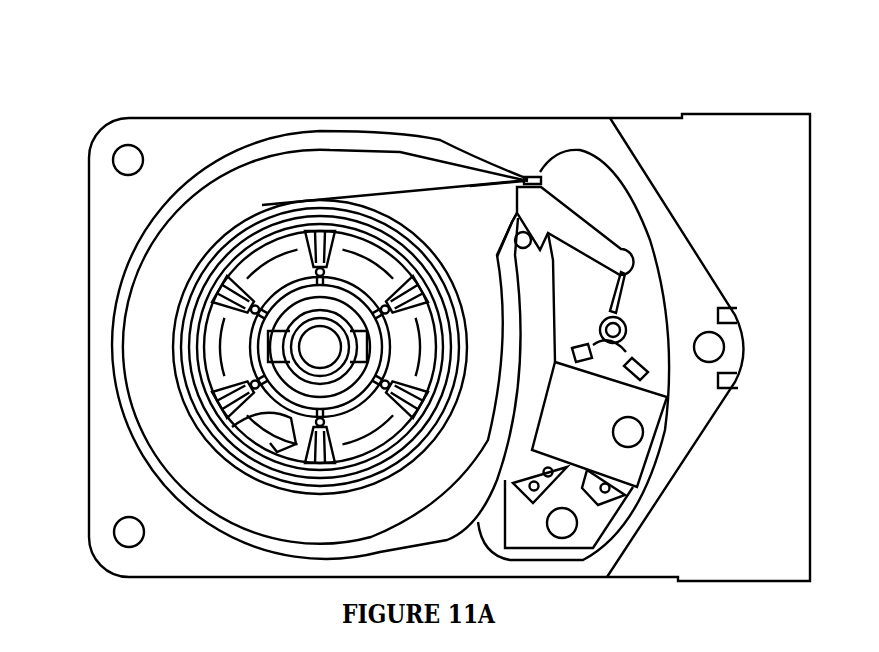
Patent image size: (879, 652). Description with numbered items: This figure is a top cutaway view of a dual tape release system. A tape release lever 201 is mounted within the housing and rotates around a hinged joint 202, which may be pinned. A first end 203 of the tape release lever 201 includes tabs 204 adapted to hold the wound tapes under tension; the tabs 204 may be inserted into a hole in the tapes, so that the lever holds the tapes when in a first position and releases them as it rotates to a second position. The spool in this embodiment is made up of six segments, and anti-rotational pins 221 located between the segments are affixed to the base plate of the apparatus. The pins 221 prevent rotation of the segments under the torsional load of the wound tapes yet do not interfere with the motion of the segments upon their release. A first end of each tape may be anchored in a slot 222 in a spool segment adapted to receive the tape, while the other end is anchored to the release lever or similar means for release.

The tape release lever 201 is at (600, 231).
The hinged joint 202 is at (533, 217).
The first end 203 is at (512, 188).
The tabs 204 is at (533, 180).
The anti-rotational pins 221 is at (243, 375).
The slot 222 is at (275, 413).